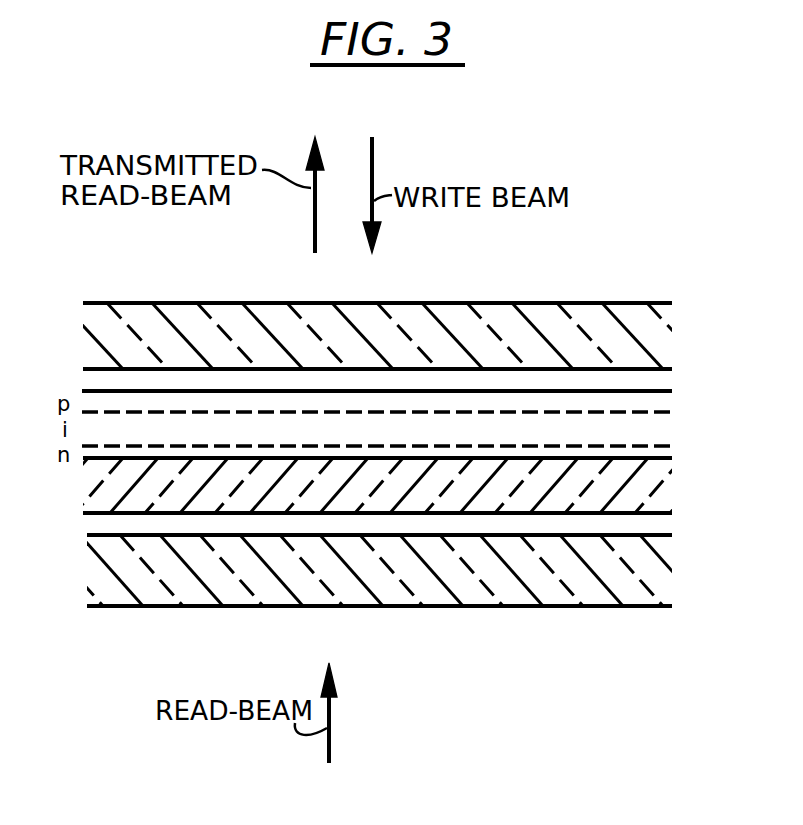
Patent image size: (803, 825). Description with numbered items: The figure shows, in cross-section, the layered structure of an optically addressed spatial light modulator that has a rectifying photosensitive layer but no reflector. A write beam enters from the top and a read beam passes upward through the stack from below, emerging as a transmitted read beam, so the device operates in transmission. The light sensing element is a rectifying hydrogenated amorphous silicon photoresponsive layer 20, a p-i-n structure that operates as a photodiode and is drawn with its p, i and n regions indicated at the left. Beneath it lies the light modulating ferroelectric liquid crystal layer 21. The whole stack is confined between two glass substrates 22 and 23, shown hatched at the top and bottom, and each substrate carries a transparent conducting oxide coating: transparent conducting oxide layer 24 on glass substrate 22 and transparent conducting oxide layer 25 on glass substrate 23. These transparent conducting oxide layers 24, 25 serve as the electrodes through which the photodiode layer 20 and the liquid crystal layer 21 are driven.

The photoresponsive layer 20 is at (655, 434).
The ferroelectric liquid crystal layer 21 is at (650, 490).
The glass substrate 22 is at (655, 340).
The glass substrate 23 is at (647, 578).
The transparent conducting oxide layer 24 is at (650, 382).
The transparent conducting oxide layer 25 is at (648, 527).